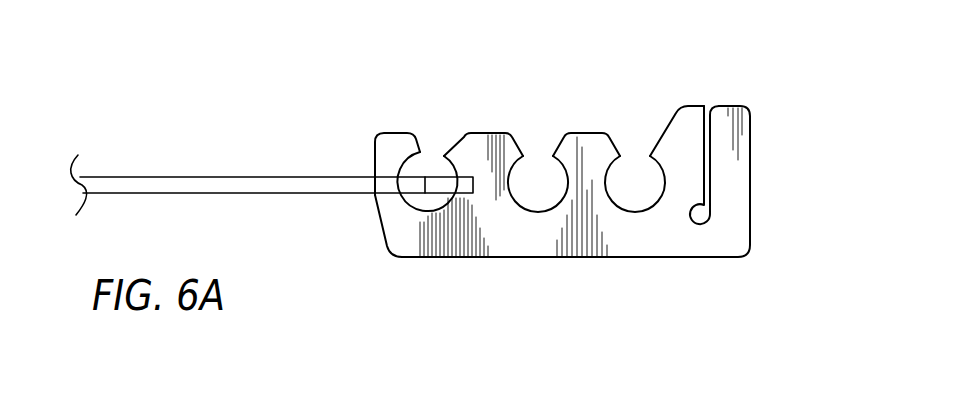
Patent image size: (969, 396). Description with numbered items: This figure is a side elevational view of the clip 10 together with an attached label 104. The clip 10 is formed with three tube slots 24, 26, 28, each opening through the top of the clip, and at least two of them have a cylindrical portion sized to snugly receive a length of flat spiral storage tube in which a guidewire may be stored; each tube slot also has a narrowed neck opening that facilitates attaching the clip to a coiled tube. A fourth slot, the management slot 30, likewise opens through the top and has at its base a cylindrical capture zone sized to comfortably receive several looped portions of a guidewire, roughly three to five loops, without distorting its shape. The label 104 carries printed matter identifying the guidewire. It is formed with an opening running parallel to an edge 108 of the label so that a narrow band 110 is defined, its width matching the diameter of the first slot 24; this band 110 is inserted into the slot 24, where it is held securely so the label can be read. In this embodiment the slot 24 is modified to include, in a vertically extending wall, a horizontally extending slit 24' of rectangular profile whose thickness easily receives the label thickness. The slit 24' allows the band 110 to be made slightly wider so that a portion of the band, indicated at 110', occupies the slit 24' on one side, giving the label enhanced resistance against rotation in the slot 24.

The clip 10 is at (647, 78).
The first tube slot 24 is at (427, 235).
The slit 24' is at (473, 252).
The tube slot 26 is at (531, 213).
The tube slot 28 is at (626, 214).
The management slot 30 is at (704, 192).
The label 104 is at (293, 177).
The edge of the label 108 is at (475, 186).
The band 110 is at (427, 115).
The retaining post edge 110' is at (470, 133).